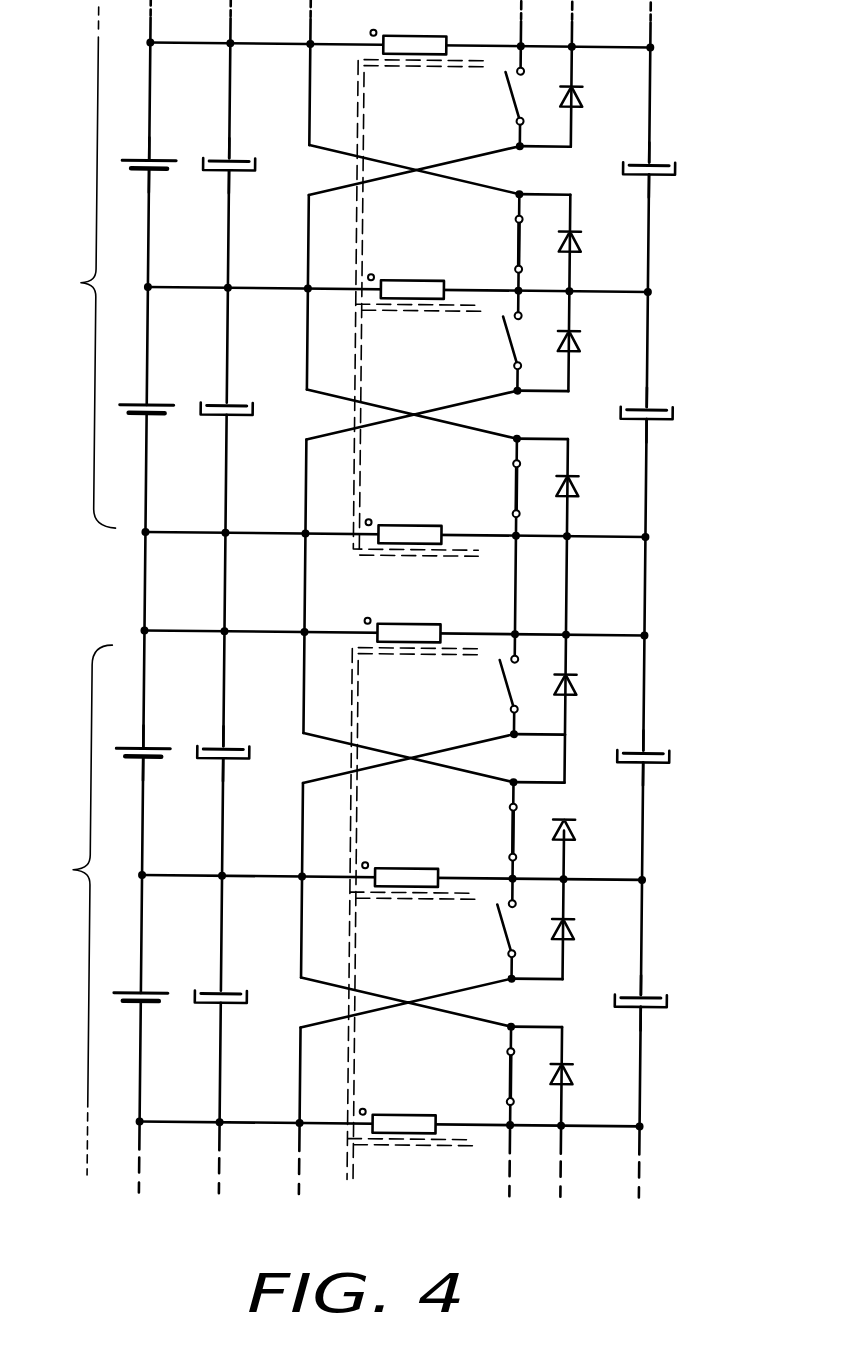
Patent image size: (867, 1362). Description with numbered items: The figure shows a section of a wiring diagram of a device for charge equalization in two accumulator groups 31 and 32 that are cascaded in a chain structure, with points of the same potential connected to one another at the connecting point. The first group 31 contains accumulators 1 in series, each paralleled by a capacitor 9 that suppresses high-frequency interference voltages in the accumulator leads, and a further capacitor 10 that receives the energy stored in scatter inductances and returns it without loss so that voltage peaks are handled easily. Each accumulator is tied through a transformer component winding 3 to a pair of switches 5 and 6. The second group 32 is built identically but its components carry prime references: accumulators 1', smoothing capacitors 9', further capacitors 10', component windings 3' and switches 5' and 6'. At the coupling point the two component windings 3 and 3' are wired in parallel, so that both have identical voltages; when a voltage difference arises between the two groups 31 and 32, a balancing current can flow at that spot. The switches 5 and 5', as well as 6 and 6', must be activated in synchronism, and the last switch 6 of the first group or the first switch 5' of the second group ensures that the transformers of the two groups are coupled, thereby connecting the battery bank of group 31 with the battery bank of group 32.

The accumulator 1 is at (159, 140).
The accumulator 1' is at (148, 731).
The component winding 3 is at (406, 287).
The component winding 3' is at (401, 852).
The switch 5 is at (480, 290).
The switch 5' is at (475, 805).
The switch 6 is at (483, 290).
The switch 6' is at (477, 949).
The capacitor 9 is at (237, 181).
The capacitor 9' is at (234, 776).
The capacitor 10 is at (681, 292).
The capacitor 10' is at (679, 880).
The first accumulator group 31 is at (77, 267).
The second accumulator group 32 is at (68, 909).